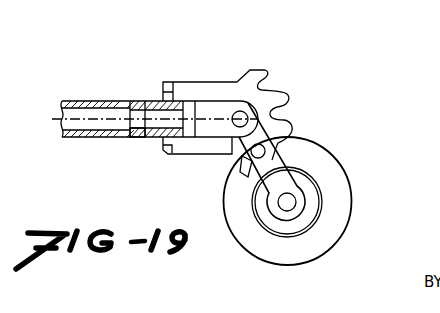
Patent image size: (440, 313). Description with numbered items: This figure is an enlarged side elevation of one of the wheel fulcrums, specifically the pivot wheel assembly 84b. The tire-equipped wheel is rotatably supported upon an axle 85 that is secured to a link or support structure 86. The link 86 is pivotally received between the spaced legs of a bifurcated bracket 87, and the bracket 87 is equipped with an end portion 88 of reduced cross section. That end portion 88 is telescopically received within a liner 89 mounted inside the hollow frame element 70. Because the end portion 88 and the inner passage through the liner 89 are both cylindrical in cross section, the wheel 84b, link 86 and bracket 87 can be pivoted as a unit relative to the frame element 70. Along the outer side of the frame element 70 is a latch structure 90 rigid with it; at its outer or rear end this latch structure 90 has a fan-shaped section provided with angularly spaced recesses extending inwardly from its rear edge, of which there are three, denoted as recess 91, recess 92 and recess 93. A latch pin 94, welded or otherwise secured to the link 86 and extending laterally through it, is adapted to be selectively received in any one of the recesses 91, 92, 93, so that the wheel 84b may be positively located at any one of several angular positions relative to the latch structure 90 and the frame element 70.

The frame element 70 is at (87, 101).
The end portion 88 is at (147, 110).
The liner 89 is at (140, 132).
The latch structure 90 is at (197, 88).
The bifurcated bracket 87 is at (217, 107).
The recess 93 is at (271, 87).
The recess 92 is at (285, 120).
The recess 91 is at (258, 170).
The latch pin 94 is at (250, 152).
The pivot wheel assembly 84b is at (342, 188).
The link 86 is at (299, 168).
The axle 85 is at (287, 203).